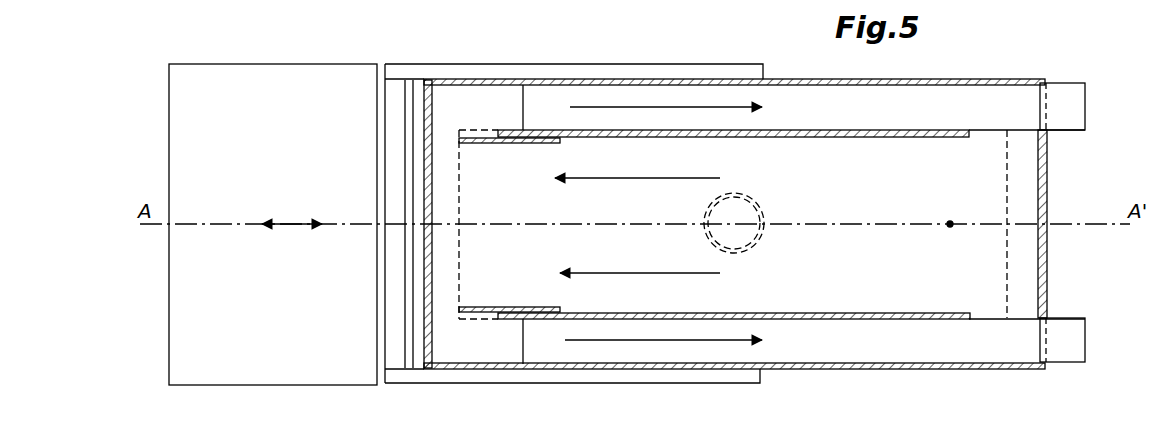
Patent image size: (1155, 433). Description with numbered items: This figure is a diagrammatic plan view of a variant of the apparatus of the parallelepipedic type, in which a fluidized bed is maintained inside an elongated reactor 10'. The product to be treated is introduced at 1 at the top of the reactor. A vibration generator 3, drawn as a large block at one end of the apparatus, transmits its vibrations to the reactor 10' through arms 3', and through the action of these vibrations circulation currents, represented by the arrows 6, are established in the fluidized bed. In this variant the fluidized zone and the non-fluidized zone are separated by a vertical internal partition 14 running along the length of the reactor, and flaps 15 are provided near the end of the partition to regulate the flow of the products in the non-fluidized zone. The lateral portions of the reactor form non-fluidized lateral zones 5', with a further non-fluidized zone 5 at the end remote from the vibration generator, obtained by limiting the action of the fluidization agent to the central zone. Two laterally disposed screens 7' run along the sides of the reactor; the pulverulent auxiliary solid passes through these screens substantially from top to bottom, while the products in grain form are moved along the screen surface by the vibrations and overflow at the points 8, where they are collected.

The product introduction point 1 is at (951, 232).
The vibration generator 3 is at (273, 206).
The arms 3' is at (574, 227).
The non-fluidized zone 5 is at (1051, 224).
The non-fluidized lateral zone 5' is at (454, 227).
The circulation current arrows 6 is at (712, 106).
The screens 7' is at (734, 224).
The overflow point 8 is at (1066, 97).
The reactor 10' is at (1023, 179).
The vertical internal partition 14 is at (880, 137).
The flaps 15 is at (495, 143).